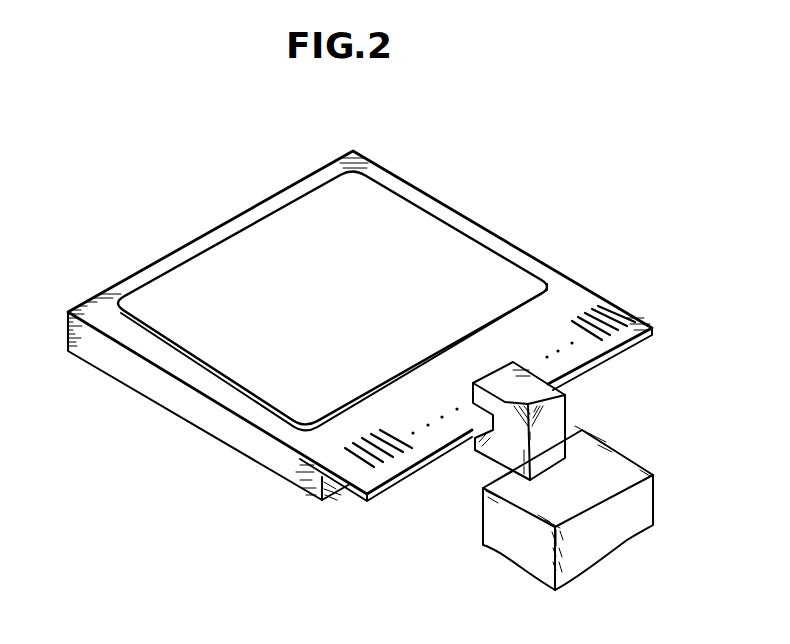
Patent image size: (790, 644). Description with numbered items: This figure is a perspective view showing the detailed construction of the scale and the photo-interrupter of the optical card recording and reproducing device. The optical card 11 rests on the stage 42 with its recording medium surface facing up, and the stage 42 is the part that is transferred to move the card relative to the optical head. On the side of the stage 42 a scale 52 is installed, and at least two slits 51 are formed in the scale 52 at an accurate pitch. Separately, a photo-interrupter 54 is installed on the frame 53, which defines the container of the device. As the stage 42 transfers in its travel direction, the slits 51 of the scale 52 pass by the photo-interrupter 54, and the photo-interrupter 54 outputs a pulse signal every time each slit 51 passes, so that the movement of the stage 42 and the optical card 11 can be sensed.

The optical card 11 is at (234, 252).
The stage 42 is at (492, 233).
The slits 51 is at (393, 464).
The scale 52 is at (629, 306).
The frame 53 is at (626, 467).
The photo-interrupter 54 is at (566, 410).